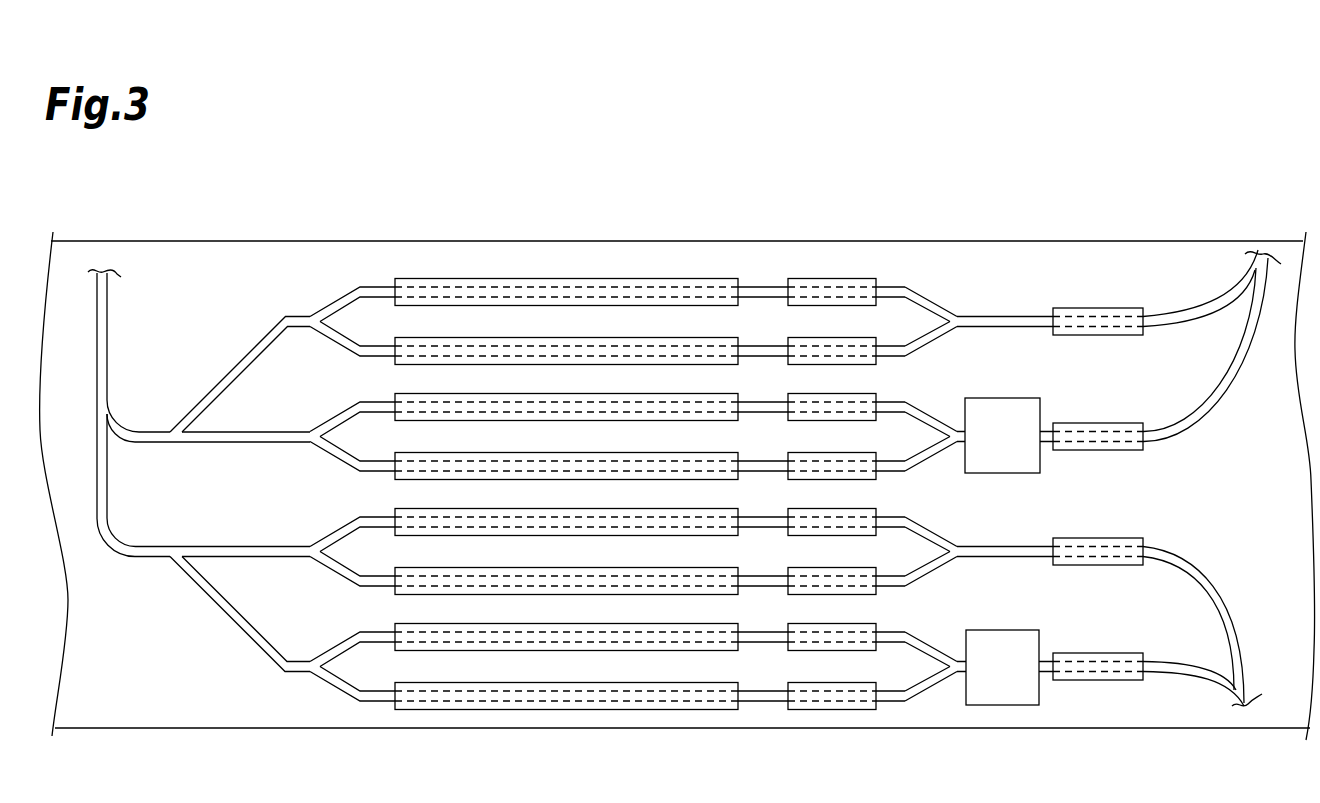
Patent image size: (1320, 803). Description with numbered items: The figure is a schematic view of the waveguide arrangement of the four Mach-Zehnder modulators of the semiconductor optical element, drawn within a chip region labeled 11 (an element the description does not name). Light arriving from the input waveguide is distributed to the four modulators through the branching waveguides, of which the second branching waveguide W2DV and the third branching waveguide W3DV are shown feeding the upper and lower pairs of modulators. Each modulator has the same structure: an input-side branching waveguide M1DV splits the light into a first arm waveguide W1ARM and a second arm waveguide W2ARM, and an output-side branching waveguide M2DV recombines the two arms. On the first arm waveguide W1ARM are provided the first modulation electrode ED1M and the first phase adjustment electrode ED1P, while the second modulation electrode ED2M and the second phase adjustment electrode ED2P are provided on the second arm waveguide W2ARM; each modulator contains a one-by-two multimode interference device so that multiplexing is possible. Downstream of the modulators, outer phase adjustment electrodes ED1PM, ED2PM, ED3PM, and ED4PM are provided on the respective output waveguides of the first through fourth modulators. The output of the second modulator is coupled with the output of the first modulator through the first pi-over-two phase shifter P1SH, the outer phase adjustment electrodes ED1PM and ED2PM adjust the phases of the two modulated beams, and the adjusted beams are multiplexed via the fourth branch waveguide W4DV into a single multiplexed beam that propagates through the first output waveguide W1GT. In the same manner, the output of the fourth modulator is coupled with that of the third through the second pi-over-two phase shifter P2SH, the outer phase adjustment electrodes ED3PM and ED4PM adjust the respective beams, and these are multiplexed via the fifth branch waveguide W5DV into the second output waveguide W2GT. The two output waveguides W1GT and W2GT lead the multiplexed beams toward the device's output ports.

The optical integrated circuit chip 11 is at (957, 730).
The second branching waveguide W2DV is at (168, 424).
The third branching waveguide W3DV is at (173, 543).
The input-side branching waveguide M1DV is at (309, 304).
The first modulation electrode ED1M is at (540, 278).
The second modulation electrode ED2M is at (705, 365).
The first arm waveguide W1ARM is at (556, 310).
The second arm waveguide W2ARM is at (703, 342).
The first phase adjustment electrode ED1P is at (850, 278).
The second phase adjustment electrode ED2P is at (850, 338).
The output-side branching waveguide M2DV is at (954, 304).
The outer phase adjustment electrode ED1PM is at (1100, 292).
The outer phase adjustment electrode ED2PM is at (1100, 407).
The outer phase adjustment electrode ED3PM is at (1100, 522).
The outer phase adjustment electrode ED4PM is at (1100, 637).
The first phase shifter P1SH is at (1037, 448).
The second phase shifter P2SH is at (1037, 680).
The fourth branch waveguide W4DV is at (1250, 259).
The fifth branch waveguide W5DV is at (1258, 684).
The first output waveguide W1GT is at (1270, 273).
The second output waveguide W2GT is at (1229, 690).